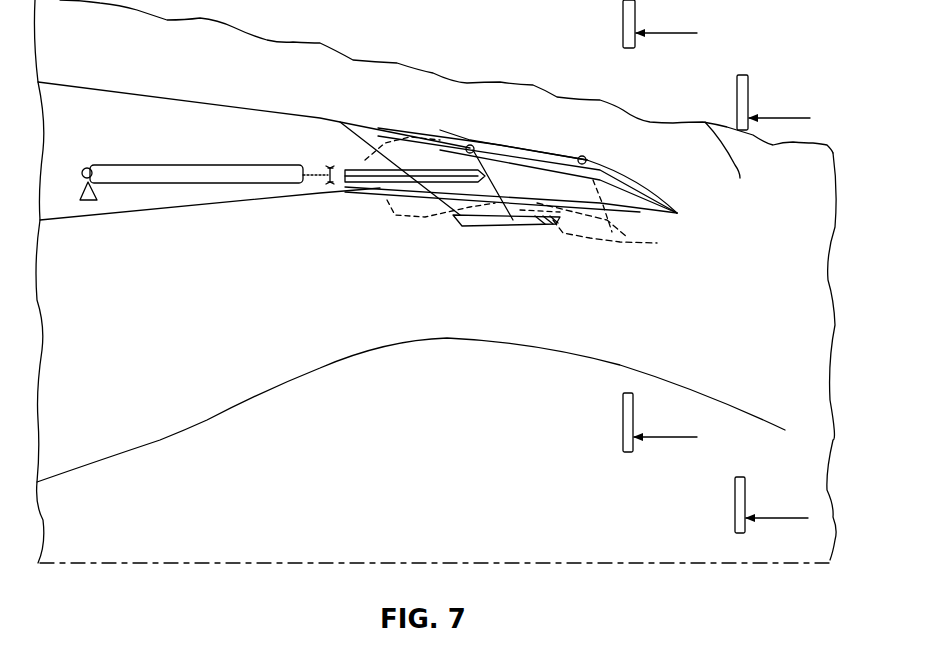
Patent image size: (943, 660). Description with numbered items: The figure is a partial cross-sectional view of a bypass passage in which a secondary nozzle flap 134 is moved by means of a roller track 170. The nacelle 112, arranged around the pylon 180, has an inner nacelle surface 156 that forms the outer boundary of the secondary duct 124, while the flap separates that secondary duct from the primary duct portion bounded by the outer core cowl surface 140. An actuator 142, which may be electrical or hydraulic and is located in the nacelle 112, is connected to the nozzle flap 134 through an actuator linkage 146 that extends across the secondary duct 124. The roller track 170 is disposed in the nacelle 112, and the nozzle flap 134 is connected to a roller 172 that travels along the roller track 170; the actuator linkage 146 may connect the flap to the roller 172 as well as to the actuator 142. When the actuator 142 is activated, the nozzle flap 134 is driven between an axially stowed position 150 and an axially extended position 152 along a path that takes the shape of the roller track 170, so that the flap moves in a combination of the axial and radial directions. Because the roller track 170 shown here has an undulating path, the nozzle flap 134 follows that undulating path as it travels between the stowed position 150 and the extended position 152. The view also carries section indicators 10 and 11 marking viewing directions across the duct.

The section view indicator 10 is at (773, 117).
The section view indicator 11 is at (672, 33).
The nacelle 112 is at (182, 110).
The secondary duct 124 is at (378, 197).
The secondary nozzle flap 134 is at (487, 234).
The outer core cowl surface 140 is at (277, 391).
The actuator 142 is at (247, 180).
The actuator linkage 146 is at (360, 153).
The axially stowed position 150 is at (423, 220).
The axially extended position 152 is at (624, 247).
The inner nacelle surface 156 is at (298, 195).
The roller track 170 is at (487, 133).
The roller 172 is at (590, 160).
The pylon 180 is at (704, 120).